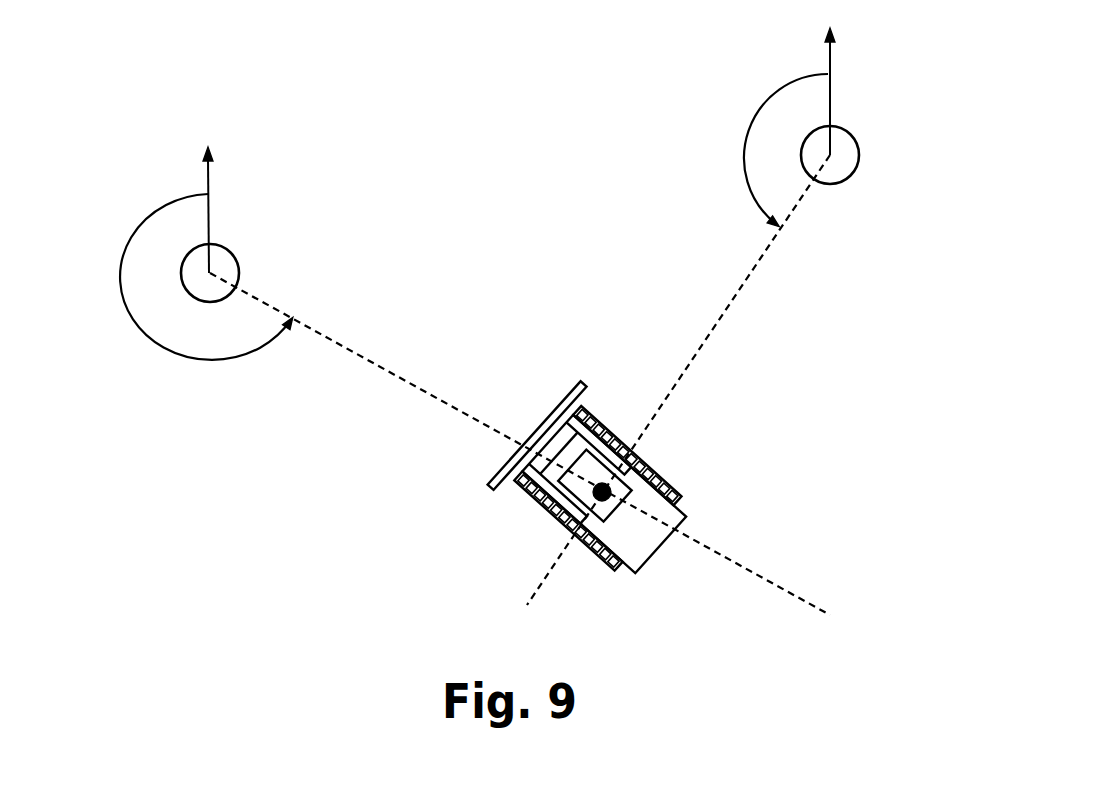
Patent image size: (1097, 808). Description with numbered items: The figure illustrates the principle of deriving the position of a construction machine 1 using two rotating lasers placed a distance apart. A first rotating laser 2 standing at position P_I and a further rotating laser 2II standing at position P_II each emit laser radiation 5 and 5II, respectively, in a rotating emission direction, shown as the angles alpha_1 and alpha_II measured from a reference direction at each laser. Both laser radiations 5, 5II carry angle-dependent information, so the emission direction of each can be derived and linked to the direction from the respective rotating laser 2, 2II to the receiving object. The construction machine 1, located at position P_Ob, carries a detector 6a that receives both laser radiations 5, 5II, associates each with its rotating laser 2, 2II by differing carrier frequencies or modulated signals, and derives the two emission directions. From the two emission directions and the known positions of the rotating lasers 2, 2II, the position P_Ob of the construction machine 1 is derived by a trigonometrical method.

The construction machine 1 is at (512, 530).
The first rotating laser 2 is at (840, 156).
The further rotating laser 2II is at (221, 262).
The laser radiation 5 is at (738, 290).
The laser radiation 5II is at (382, 367).
The detector 6a is at (610, 488).